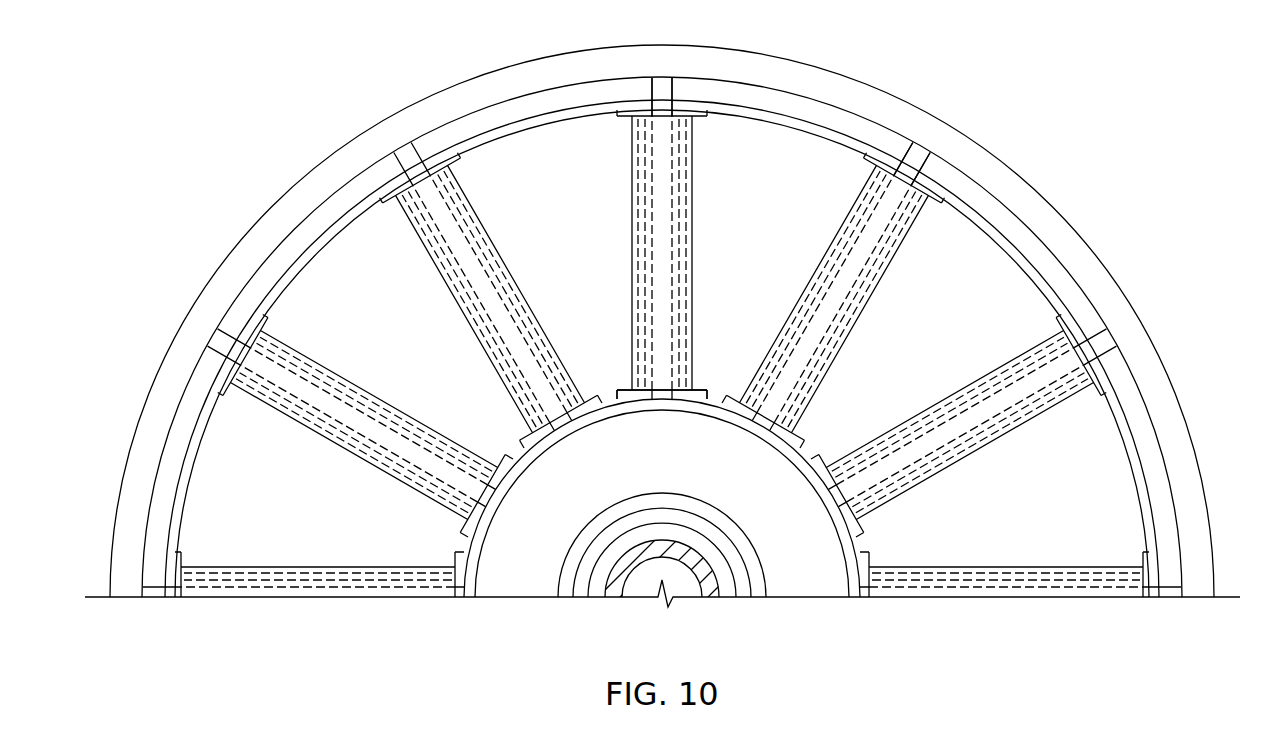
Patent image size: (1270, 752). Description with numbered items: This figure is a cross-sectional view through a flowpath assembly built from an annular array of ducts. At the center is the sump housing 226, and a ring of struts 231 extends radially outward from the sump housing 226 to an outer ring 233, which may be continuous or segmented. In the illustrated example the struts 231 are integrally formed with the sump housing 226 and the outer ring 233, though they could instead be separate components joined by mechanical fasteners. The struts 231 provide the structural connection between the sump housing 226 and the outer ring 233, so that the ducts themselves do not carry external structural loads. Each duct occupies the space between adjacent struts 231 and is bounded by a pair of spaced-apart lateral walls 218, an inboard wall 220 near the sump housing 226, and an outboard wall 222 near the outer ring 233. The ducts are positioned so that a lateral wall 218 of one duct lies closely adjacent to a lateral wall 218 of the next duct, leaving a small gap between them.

The lateral walls 218 is at (695, 264).
The inboard wall 220 is at (727, 383).
The outboard wall 222 is at (807, 139).
The sump housing 226 is at (545, 441).
The struts 231 is at (673, 88).
The outer ring 233 is at (887, 98).